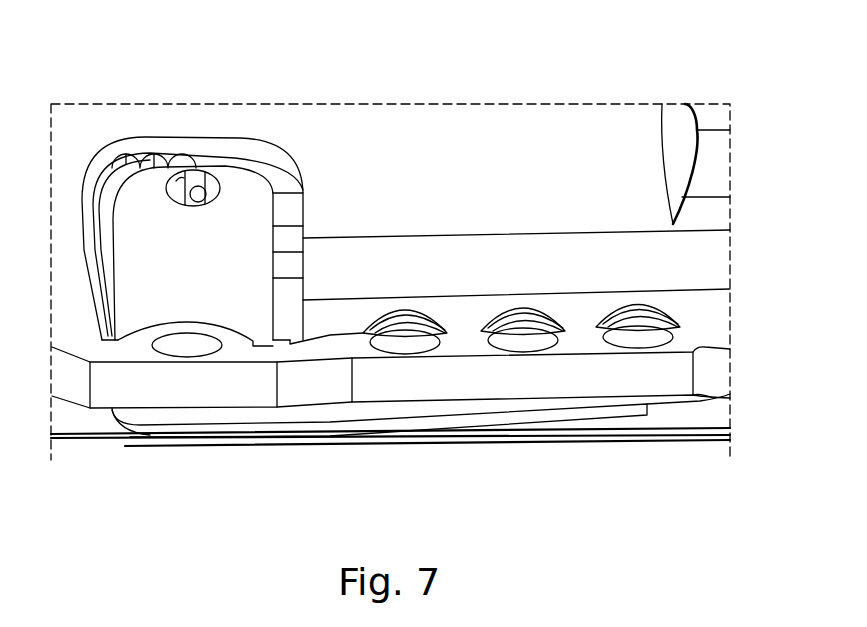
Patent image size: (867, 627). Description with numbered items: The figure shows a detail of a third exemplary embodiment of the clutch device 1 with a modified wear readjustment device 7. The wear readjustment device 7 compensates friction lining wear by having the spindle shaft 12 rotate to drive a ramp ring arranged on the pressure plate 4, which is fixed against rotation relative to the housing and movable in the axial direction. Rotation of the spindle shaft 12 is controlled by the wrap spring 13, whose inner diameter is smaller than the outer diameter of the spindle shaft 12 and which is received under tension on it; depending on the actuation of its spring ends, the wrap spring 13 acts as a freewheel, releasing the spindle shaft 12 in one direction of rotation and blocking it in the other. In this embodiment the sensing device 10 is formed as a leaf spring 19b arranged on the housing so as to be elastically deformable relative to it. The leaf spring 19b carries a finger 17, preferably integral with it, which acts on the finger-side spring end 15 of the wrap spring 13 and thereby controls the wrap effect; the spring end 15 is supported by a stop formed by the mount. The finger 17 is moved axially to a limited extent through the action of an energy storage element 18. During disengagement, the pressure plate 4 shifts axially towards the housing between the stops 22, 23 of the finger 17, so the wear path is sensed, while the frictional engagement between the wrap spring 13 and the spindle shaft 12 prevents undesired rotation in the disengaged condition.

The clutch device 1 is at (673, 73).
The pressure plate 4 is at (677, 416).
The wear readjustment device 7 is at (262, 178).
The sensing device 10 is at (294, 449).
The spindle shaft 12 is at (290, 205).
The wrap spring 13 is at (132, 158).
The spring end 15 is at (199, 178).
The finger 17 is at (247, 243).
The energy storage element 18 is at (354, 410).
The leaf spring 19b is at (155, 427).
The stop 22 is at (171, 172).
The stop 23 is at (197, 207).